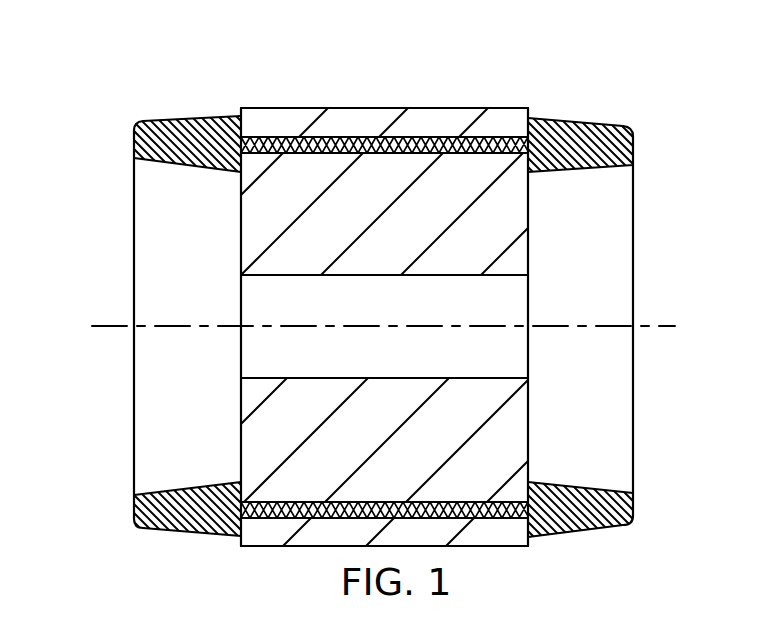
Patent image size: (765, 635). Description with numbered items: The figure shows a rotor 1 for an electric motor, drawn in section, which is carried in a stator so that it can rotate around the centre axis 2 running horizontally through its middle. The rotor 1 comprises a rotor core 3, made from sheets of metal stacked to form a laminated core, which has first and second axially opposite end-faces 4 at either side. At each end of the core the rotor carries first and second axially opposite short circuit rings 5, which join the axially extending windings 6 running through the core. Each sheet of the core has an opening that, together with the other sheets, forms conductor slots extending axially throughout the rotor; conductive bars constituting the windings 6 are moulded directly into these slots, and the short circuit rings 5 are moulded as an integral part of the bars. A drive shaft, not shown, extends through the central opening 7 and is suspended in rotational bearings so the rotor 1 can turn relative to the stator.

The rotor 1 is at (88, 83).
The centre axis 2 is at (578, 327).
The rotor core 3 is at (260, 219).
The end-faces 4 is at (241, 413).
The short circuit rings 5 is at (187, 122).
The windings 6 is at (285, 501).
The opening 7 is at (260, 300).